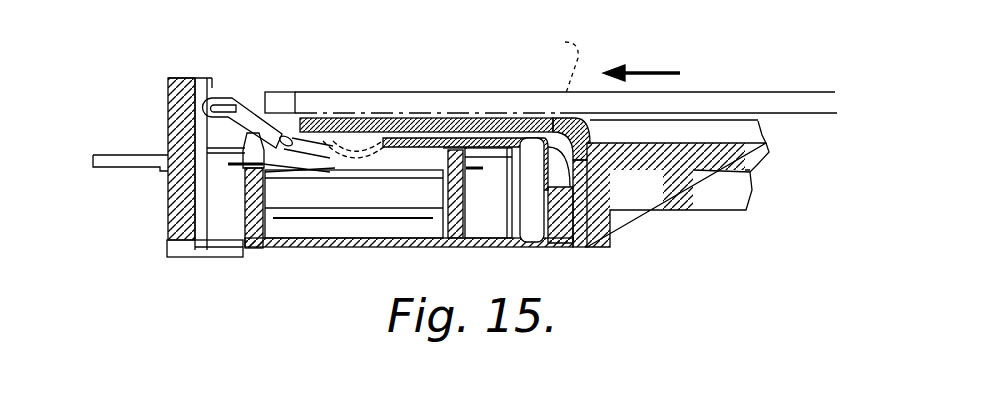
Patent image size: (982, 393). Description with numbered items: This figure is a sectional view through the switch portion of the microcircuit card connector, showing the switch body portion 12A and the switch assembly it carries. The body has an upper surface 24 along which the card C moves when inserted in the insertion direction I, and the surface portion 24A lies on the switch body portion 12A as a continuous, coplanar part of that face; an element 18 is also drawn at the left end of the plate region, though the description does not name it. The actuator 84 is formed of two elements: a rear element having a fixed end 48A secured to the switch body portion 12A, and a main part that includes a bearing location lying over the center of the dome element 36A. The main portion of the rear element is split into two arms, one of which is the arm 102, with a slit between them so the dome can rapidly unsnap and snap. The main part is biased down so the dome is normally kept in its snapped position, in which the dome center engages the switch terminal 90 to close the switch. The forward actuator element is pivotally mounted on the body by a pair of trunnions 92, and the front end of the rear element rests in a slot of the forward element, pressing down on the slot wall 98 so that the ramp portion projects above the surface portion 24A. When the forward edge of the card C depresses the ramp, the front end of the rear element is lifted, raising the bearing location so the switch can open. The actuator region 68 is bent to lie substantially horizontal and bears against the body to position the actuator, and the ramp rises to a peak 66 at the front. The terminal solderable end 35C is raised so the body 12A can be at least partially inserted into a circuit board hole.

The peak 66 is at (168, 80).
The actuator region 68 is at (222, 78).
The terminal solderable end 35C is at (122, 153).
The actuator 84 is at (241, 88).
The plate end 18 is at (278, 92).
The body upper surface 24 is at (720, 118).
The surface portion 24A is at (393, 119).
The arm 102 is at (440, 138).
The trunnions 92 is at (292, 138).
The slot wall 98 is at (332, 162).
The dome element 36A is at (407, 175).
The switch terminal 90 is at (354, 175).
The fixed end 48A is at (557, 244).
The switch body portion 12A is at (613, 211).
The card C is at (563, 62).
The insertion direction I is at (648, 73).